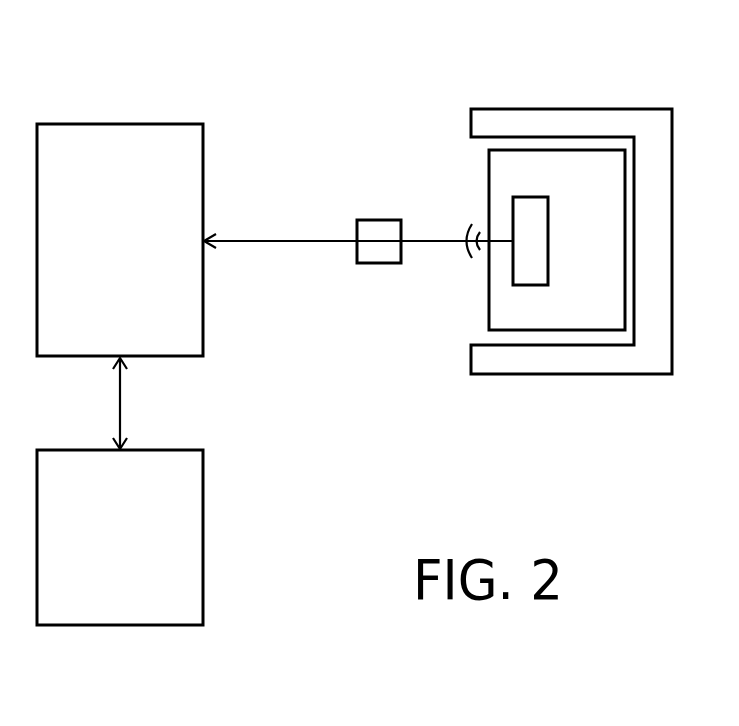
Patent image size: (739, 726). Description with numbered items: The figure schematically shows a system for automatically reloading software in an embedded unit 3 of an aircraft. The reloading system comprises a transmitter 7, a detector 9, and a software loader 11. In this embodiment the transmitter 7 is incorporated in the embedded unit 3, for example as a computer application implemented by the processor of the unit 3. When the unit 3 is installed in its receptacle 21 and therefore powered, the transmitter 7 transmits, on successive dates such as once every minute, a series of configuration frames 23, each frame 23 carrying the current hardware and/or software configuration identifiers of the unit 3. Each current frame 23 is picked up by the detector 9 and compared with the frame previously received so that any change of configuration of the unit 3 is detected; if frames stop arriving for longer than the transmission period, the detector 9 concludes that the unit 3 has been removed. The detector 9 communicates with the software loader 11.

The detector 9 is at (204, 154).
The software loader 11 is at (204, 467).
The configuration frame 23 is at (369, 220).
The receptacle 21 is at (573, 109).
The embedded unit 3 is at (486, 312).
The transmitter 7 is at (513, 205).